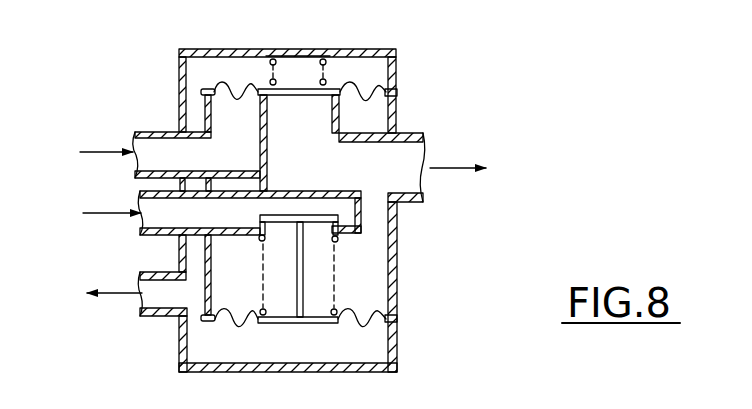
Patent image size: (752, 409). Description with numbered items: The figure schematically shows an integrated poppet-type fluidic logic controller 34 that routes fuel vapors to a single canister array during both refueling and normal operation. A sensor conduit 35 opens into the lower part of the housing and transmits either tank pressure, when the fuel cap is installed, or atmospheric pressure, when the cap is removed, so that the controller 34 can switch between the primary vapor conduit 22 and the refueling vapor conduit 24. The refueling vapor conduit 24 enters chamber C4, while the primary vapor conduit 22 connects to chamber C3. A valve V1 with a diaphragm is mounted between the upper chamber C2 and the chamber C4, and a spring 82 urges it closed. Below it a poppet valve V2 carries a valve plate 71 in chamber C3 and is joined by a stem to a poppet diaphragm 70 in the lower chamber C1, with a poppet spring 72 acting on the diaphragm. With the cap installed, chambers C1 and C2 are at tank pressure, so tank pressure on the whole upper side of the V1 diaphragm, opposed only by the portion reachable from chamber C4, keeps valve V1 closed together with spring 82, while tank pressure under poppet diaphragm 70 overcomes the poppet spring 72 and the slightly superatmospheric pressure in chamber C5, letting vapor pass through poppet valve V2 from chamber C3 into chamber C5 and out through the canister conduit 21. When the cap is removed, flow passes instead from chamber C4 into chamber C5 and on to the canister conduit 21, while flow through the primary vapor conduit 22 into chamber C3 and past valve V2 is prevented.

The fluidic logic controller 34 is at (90, 68).
The spring 82 is at (266, 55).
The valve V1 is at (339, 91).
The chamber C2 is at (197, 68).
The refueling vapor conduit 24 is at (135, 132).
The canister conduit 21 is at (420, 134).
The chamber C4 is at (217, 163).
The chamber C5 is at (315, 163).
The valve plate 71 is at (315, 215).
The poppet valve V2 is at (341, 212).
The chamber C3 is at (140, 200).
The primary vapor conduit 22 is at (152, 235).
The sensor conduit 35 is at (150, 318).
The poppet spring 72 is at (337, 310).
The poppet diaphragm 70 is at (325, 325).
The chamber C1 is at (278, 357).